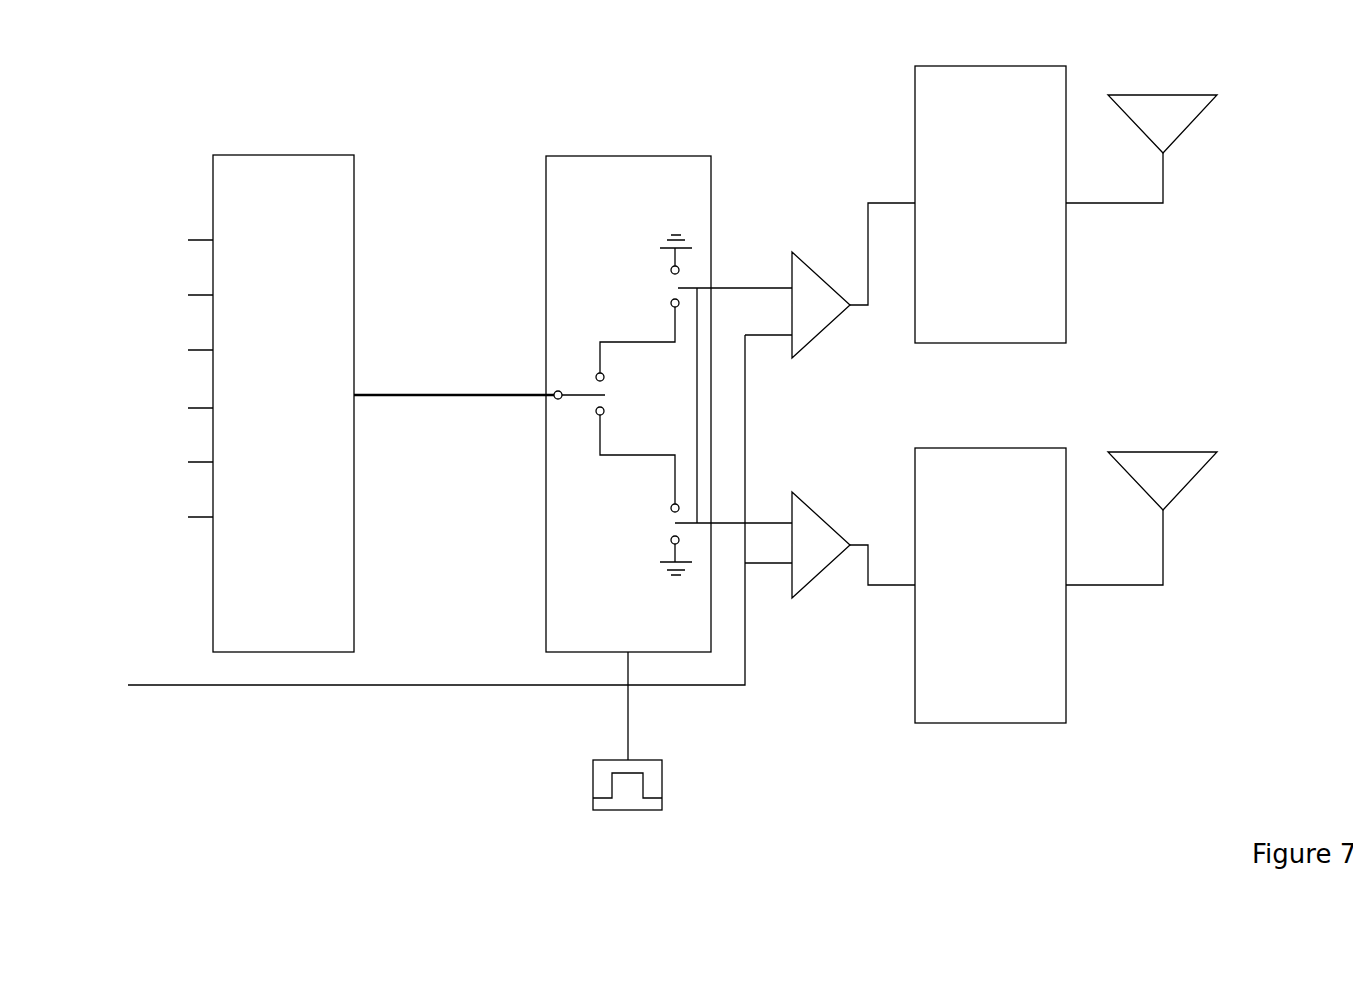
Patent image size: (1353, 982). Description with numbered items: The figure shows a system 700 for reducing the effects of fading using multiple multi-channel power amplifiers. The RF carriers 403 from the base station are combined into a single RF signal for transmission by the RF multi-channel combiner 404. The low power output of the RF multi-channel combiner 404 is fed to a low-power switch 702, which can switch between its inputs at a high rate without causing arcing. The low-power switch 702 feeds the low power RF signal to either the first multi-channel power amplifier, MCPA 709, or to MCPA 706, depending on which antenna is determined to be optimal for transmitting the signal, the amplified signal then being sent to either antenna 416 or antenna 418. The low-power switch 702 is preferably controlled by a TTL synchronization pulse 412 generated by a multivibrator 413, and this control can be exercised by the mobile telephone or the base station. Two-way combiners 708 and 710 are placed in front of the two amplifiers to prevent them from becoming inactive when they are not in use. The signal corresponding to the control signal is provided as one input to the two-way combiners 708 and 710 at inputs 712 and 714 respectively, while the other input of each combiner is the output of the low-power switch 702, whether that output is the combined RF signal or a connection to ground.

The system 700 is at (270, 783).
The RF carriers 403 is at (152, 512).
The RF multi-channel combiner 404 is at (383, 403).
The low-power switch 702 is at (658, 156).
The two-way combiner 708 is at (813, 265).
The two-way combiner 710 is at (805, 500).
The input 712 is at (768, 337).
The input 714 is at (772, 565).
The multi-carrier power amplifier (MCPA) 709 is at (990, 204).
The MCPA 706 is at (990, 585).
The antenna 416 is at (1190, 122).
The antenna 418 is at (1197, 467).
The multivibrator 413 is at (635, 758).
The TTL synchronization pulse 412 is at (598, 800).